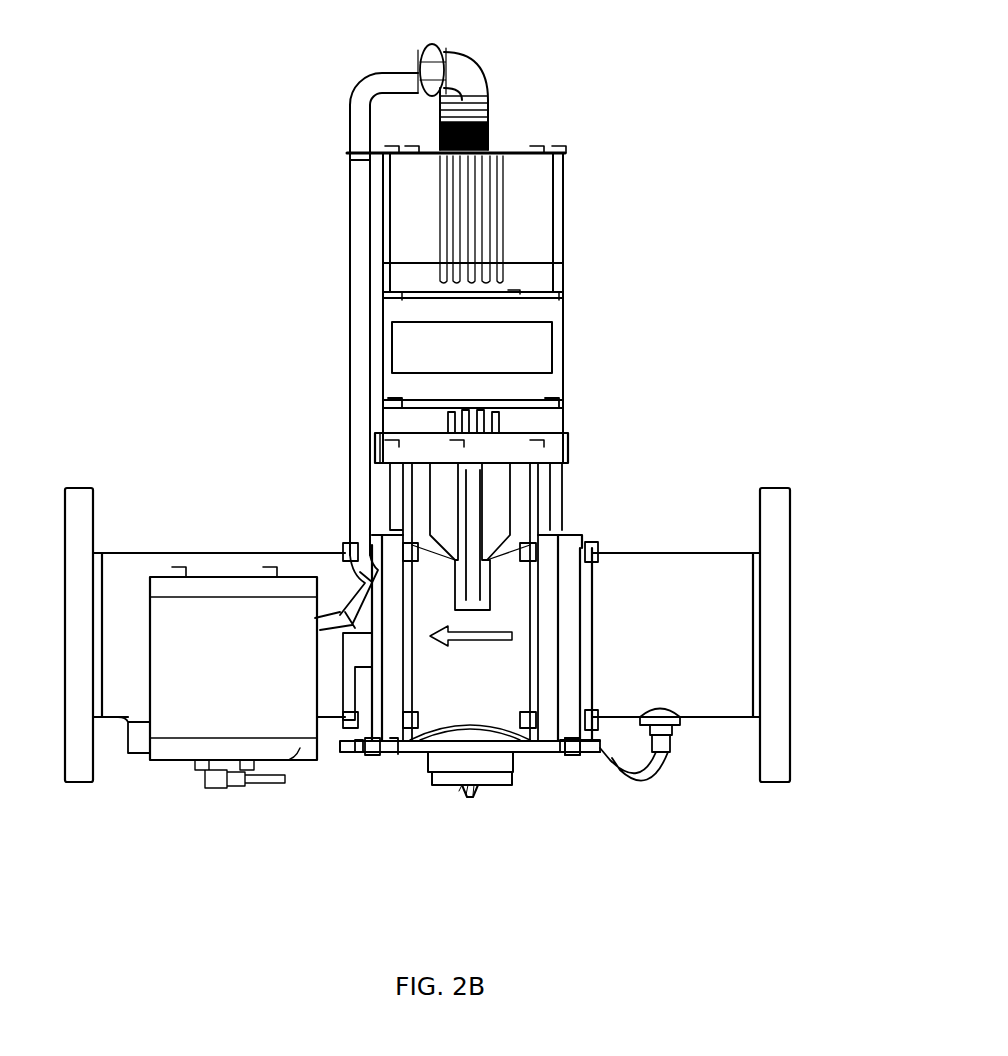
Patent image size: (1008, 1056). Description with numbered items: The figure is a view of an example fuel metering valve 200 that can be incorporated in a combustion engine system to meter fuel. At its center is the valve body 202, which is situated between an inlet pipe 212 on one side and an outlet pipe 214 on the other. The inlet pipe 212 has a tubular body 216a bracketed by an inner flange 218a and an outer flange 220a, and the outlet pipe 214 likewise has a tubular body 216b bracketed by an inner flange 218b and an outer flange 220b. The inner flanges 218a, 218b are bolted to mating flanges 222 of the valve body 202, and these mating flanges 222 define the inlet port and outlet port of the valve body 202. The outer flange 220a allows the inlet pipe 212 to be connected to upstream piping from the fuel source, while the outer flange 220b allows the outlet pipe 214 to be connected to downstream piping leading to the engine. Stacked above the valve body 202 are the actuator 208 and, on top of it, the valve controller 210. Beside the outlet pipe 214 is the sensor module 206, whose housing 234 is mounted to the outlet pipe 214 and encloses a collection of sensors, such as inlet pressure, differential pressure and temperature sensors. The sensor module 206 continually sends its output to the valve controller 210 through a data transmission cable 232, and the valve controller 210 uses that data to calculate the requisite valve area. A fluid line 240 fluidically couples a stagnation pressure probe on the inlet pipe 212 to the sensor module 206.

The fuel metering valve 200 is at (172, 127).
The valve body 202 is at (532, 782).
The sensor module 206 is at (153, 766).
The actuator 208 is at (590, 350).
The valve controller 210 is at (592, 212).
The inlet pipe 212 is at (660, 540).
The outlet pipe 214 is at (238, 540).
The tubular body 216a is at (715, 565).
The tubular body 216b is at (115, 558).
The inner flange 218a is at (582, 750).
The inner flange 218b is at (348, 730).
The outer flange 220a is at (780, 778).
The outer flange 220b is at (80, 784).
The mating flanges 222 is at (395, 722).
The data transmission cable 232 is at (352, 232).
The housing 234 is at (262, 673).
The fluid line 240 is at (662, 770).